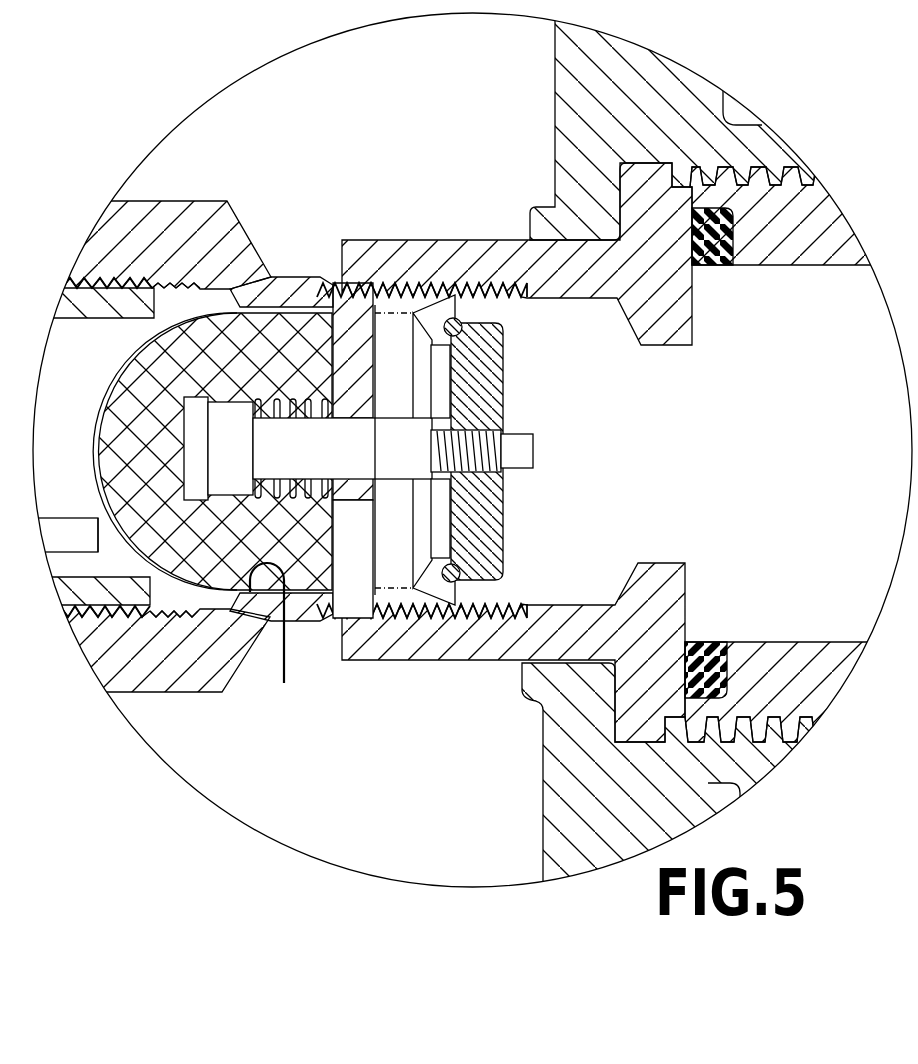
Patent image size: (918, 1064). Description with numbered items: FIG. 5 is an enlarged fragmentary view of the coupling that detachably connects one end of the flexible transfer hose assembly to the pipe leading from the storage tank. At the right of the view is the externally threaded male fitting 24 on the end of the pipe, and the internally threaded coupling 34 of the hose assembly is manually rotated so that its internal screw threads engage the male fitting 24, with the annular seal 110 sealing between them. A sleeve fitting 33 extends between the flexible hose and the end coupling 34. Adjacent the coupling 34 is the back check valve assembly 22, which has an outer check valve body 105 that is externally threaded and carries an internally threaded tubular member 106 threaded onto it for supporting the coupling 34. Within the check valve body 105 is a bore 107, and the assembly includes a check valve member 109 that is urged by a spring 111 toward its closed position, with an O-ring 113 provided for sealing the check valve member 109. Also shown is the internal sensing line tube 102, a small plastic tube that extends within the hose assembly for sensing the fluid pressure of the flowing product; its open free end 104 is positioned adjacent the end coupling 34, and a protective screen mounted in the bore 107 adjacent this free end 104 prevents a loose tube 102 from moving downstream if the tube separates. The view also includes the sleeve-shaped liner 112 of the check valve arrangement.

The back check valve assembly 22 is at (277, 336).
The externally threaded male fitting 24 is at (753, 255).
The sleeve fitting 33 is at (76, 592).
The coupling 34 is at (588, 73).
The internal sensing line tube 102 is at (58, 517).
The open free end 104 is at (102, 522).
The outer check valve body 105 is at (214, 228).
The internally threaded tubular member 106 is at (541, 627).
The bore 107 is at (279, 640).
The check valve member 109 is at (481, 509).
The annular seal 110 is at (698, 650).
The spring 111 is at (236, 406).
The sleeve liner 112 is at (163, 563).
The O-ring 113 is at (462, 581).